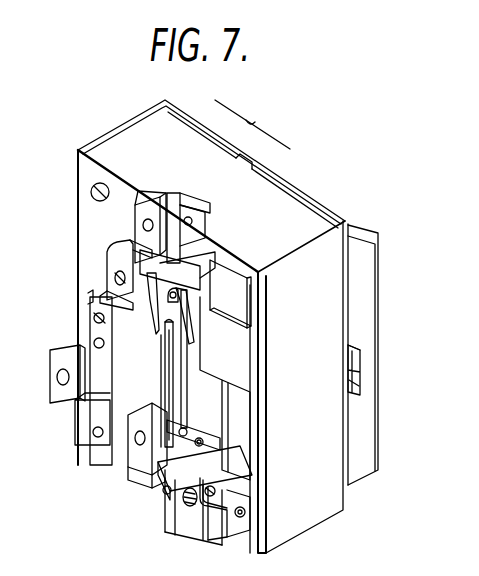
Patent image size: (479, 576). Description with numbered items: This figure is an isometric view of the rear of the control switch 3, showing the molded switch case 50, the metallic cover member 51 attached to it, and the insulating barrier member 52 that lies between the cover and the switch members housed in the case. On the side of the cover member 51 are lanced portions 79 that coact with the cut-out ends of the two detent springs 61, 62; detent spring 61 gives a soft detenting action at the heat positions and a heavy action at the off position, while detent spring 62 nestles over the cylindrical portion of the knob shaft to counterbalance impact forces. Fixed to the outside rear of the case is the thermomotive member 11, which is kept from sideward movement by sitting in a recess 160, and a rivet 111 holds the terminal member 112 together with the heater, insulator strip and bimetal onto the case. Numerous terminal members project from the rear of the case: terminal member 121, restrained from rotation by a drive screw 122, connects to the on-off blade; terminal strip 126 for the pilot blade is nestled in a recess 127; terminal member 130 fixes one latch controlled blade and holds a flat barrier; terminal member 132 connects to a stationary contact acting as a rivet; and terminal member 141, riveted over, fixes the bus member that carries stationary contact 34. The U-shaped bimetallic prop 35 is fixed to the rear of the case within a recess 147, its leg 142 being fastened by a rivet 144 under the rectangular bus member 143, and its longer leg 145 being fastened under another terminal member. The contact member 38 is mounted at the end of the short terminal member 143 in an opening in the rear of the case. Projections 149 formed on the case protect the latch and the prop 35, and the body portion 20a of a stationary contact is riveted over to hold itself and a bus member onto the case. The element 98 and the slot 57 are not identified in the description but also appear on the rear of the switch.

The control switch 3 is at (283, 120).
The thermomotive member 11 is at (252, 467).
The body portion of stationary contact 20a is at (89, 199).
The stationary contact 34 is at (175, 298).
The prop 35 is at (176, 270).
The contact member 38 is at (202, 444).
The switch case 50 is at (128, 135).
The cover member 51 is at (358, 228).
The barrier member 52 is at (308, 198).
The slot 57 is at (249, 159).
The detent spring 61 is at (350, 378).
The detent spring 62 is at (350, 392).
The lanced portions 79 is at (351, 353).
The insulating block 98 is at (137, 456).
The rivet 111 is at (240, 516).
The terminal member 112 is at (220, 535).
The terminal member 121 is at (58, 364).
The drive screw 122 is at (100, 446).
The terminal strip 126 is at (95, 328).
The recess 127 is at (90, 294).
The terminal member 130 is at (195, 508).
The terminal member 132 is at (130, 240).
The terminal member 141 is at (192, 204).
The leg of prop 142 is at (182, 407).
The bus member 143 is at (170, 487).
The rivet 144 is at (157, 466).
The longer leg of prop 145 is at (165, 385).
The recess 147 is at (185, 377).
The projections 149 is at (207, 346).
The recess 160 is at (250, 518).